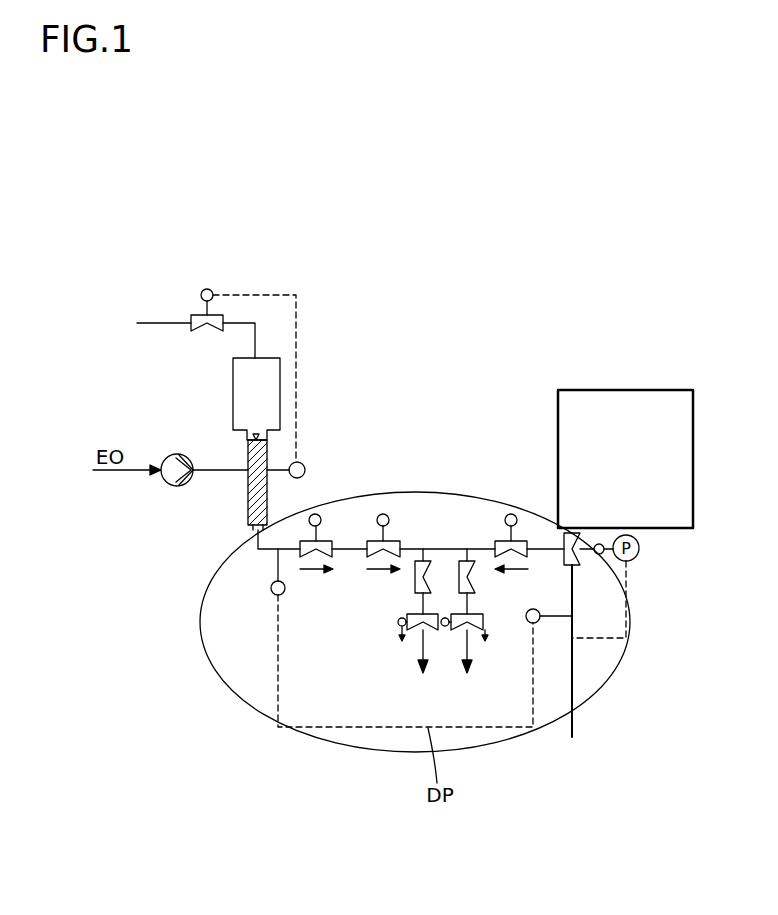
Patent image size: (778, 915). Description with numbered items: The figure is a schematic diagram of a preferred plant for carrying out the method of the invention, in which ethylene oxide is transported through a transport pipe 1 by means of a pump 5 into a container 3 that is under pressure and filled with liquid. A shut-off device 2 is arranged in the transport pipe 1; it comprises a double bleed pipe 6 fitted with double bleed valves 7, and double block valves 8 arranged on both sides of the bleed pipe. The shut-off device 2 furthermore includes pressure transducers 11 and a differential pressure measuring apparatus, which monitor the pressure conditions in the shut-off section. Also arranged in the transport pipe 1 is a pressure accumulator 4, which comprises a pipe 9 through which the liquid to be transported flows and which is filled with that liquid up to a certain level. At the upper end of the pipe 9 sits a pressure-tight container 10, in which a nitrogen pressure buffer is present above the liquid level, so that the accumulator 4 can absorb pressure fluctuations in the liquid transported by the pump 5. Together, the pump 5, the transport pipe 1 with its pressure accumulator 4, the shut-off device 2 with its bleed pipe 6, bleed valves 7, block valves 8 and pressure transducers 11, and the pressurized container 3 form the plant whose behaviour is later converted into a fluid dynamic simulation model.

The transport pipe 1 is at (220, 474).
The shut-off device 2 is at (312, 740).
The container 3 is at (612, 390).
The pressure accumulator 4 is at (285, 390).
The pump 5 is at (172, 486).
The double bleed pipe 6 is at (417, 652).
The double bleed valves 7 is at (397, 622).
The double block valves 8 is at (383, 514).
The pipe 9 is at (245, 443).
The pressure-tight container 10 is at (233, 397).
The pressure transducer 11 is at (272, 592).